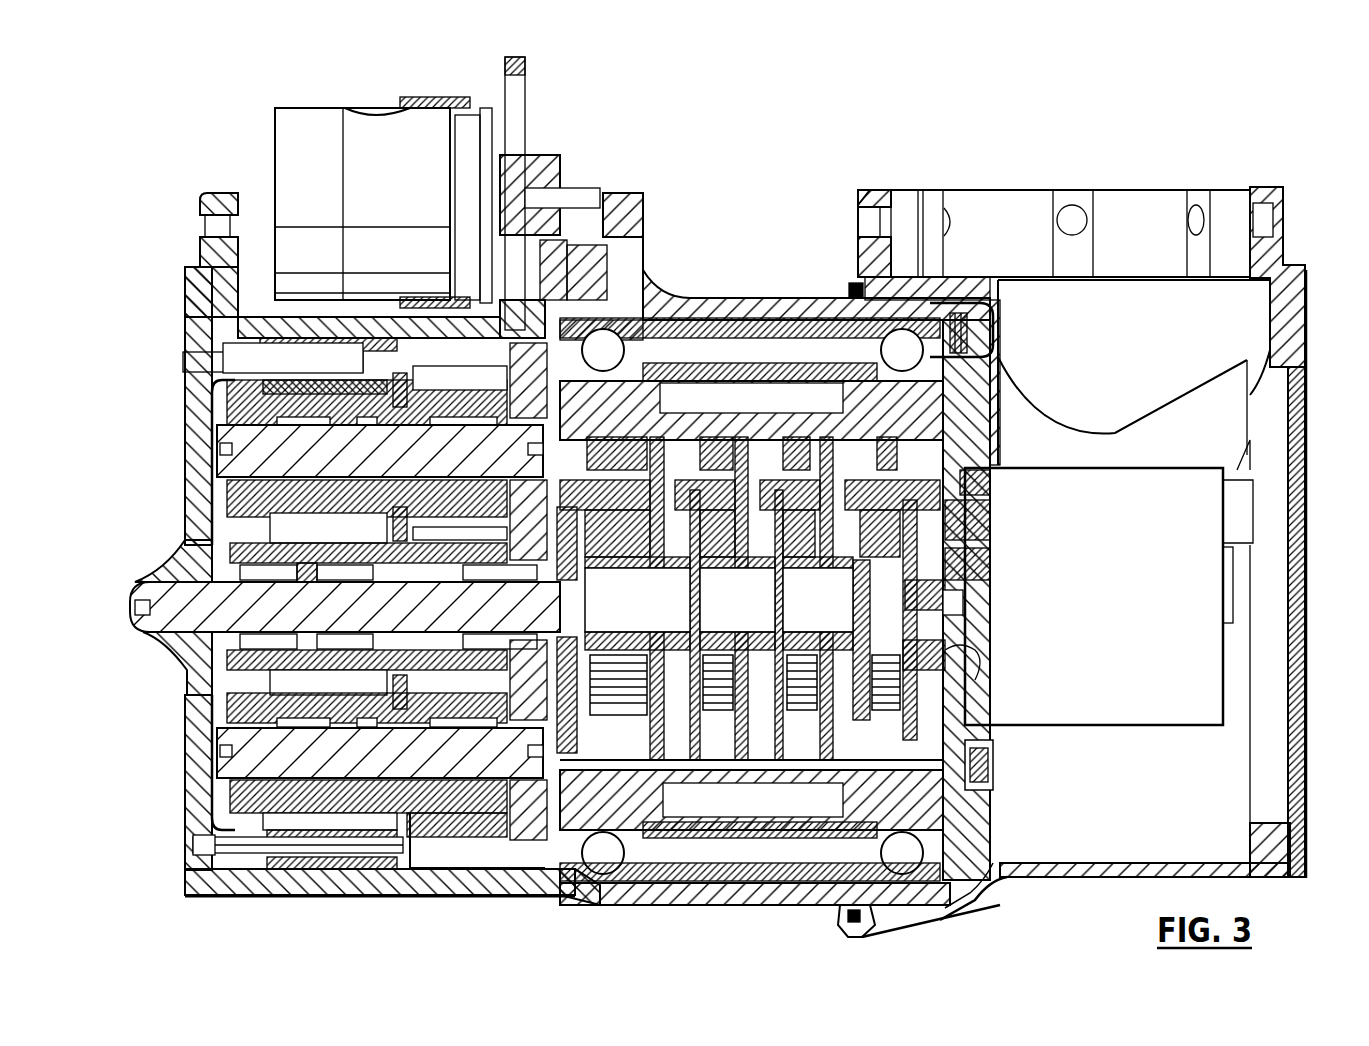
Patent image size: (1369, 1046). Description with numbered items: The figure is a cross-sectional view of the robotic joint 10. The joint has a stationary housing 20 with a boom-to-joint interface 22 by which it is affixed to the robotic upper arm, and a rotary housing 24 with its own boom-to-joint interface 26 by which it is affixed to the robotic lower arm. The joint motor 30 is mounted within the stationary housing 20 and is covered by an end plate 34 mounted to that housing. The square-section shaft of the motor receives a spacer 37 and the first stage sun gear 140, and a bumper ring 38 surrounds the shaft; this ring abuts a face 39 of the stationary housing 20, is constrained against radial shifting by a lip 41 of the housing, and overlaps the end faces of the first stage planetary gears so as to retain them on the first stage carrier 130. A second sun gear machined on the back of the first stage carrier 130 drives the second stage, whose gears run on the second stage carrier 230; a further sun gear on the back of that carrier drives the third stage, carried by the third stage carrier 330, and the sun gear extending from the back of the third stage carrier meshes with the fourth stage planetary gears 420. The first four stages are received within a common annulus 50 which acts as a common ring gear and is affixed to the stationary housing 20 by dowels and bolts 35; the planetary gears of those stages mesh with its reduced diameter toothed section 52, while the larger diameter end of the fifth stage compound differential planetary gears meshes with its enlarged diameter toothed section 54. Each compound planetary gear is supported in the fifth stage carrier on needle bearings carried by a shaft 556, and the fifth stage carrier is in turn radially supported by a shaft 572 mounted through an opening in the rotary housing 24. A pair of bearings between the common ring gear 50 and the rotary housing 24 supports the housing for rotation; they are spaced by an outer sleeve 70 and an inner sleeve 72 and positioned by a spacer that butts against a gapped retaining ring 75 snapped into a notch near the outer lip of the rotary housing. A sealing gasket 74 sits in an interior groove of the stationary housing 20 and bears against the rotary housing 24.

The robotic joint 10 is at (731, 210).
The stationary housing 20 is at (1085, 880).
The boom-to-joint interface 22 is at (1290, 200).
The rotary housing 24 is at (372, 897).
The boom-to-joint interface 26 is at (210, 192).
The joint motor 30 is at (1137, 626).
The end plate 34 is at (1308, 510).
The bolts 35 is at (985, 768).
The spacer 37 is at (962, 580).
The bumper ring 38 is at (955, 657).
The face of stationary housing 39 is at (962, 540).
The lip of stationary housing 41 is at (968, 488).
The common annulus 50 is at (710, 790).
The reduced diameter toothed section 52 is at (752, 402).
The enlarged diameter toothed section 54 is at (420, 355).
The outer sleeve 70 is at (668, 870).
The inner sleeve 72 is at (802, 835).
The sealing gasket 74 is at (840, 290).
The retaining ring 75 is at (962, 327).
The first stage carrier 130 is at (846, 580).
The sun gear 140 is at (962, 600).
The second stage carrier 230 is at (760, 582).
The third stage carrier 330 is at (678, 580).
The fourth stage planetary gears 420 is at (635, 718).
The shaft 556 is at (212, 795).
The shaft 572 is at (185, 668).